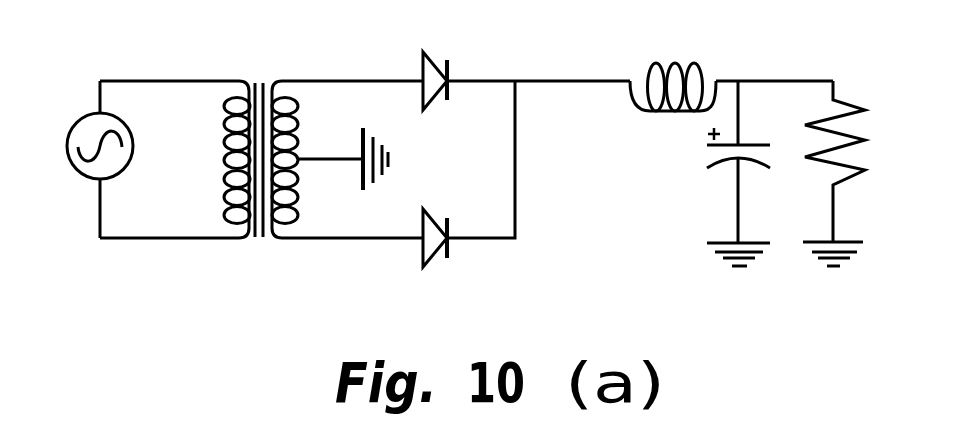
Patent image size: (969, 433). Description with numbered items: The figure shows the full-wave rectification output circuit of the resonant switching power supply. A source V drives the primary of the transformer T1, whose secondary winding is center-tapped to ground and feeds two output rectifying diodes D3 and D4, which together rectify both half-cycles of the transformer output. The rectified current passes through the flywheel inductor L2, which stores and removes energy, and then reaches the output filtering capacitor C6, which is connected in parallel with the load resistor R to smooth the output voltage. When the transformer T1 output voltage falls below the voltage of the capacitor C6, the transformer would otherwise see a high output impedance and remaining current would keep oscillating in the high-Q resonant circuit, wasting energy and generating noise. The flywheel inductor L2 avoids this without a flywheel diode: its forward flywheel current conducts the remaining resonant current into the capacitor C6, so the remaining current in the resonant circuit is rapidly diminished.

The AC voltage source V is at (81, 159).
The transformer T1 is at (244, 131).
The output rectifying diode D3 is at (442, 61).
The output rectifying diode D4 is at (441, 266).
The flywheel inductor L2 is at (673, 62).
The output filtering capacitor C6 is at (712, 173).
The load resistor R is at (851, 173).